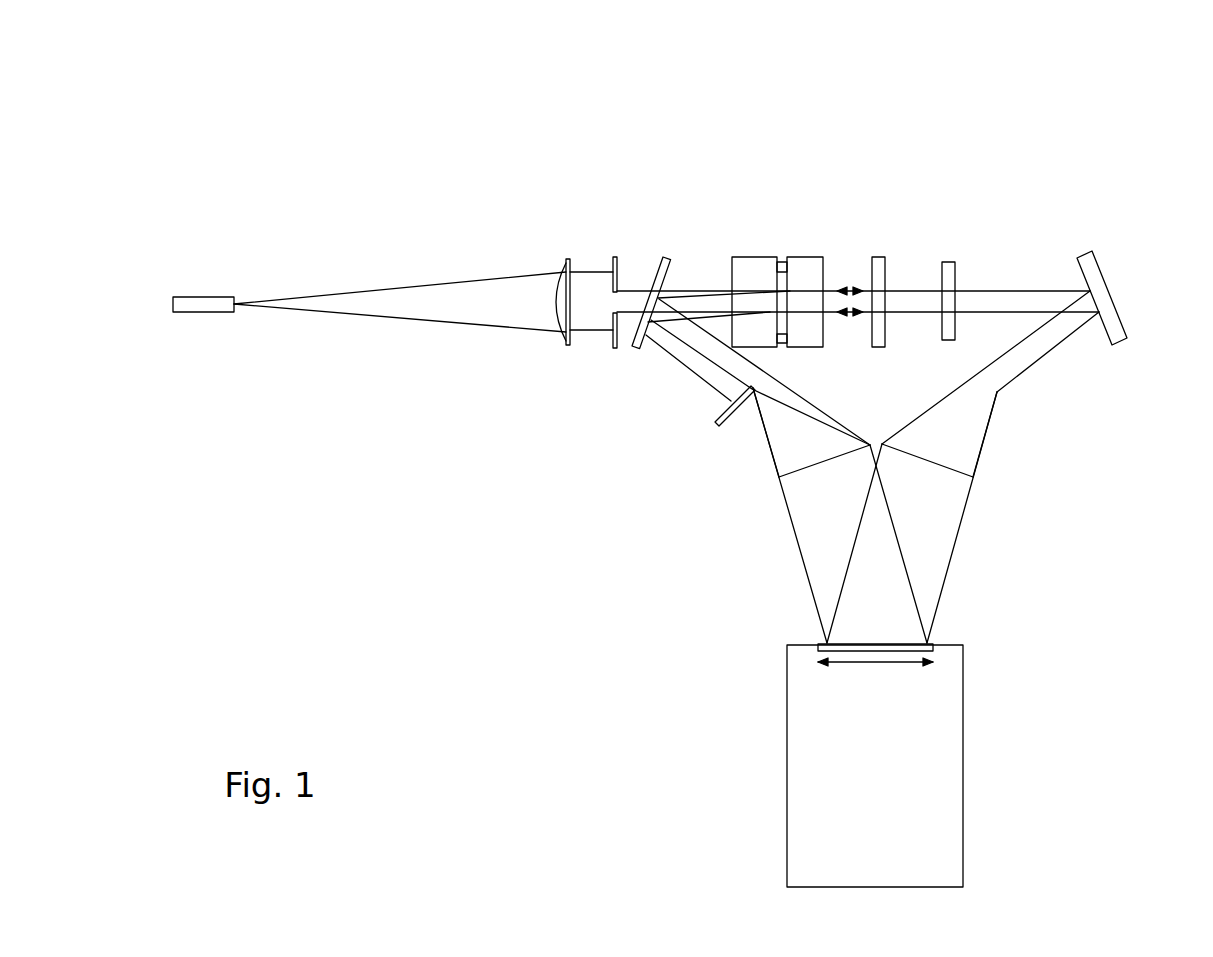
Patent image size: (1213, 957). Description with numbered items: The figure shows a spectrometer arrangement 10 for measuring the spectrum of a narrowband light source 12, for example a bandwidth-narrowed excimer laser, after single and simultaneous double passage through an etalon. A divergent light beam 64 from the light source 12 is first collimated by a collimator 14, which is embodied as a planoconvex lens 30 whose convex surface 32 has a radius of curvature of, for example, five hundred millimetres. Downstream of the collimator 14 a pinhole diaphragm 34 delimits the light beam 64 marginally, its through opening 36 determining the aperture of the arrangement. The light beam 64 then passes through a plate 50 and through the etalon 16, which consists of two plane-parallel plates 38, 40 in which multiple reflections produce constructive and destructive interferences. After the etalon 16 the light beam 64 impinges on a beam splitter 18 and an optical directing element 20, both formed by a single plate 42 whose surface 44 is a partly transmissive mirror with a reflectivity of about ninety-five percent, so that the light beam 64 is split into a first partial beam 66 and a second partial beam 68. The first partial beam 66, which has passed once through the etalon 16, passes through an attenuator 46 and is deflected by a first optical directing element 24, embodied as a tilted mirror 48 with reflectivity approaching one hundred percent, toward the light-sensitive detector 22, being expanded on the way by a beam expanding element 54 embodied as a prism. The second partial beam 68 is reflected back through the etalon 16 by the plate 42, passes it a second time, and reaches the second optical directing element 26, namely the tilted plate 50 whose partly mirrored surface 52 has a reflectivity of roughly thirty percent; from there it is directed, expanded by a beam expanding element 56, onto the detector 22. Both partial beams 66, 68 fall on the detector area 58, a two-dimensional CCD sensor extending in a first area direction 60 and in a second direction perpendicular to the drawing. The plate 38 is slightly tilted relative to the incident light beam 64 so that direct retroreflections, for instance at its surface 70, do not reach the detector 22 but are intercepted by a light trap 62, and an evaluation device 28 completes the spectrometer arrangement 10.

The spectrometer arrangement 10 is at (673, 464).
The light source 12 is at (197, 308).
The collimator 14 is at (400, 256).
The etalon 16 is at (770, 225).
The beam splitter 18 is at (868, 243).
The optical directing element 20 is at (868, 258).
The light-sensitive detector 22 is at (880, 627).
The first optical directing element 24 is at (1132, 258).
The second optical directing element 26 is at (673, 248).
The evaluation device 28 is at (803, 766).
The planoconvex lens 30 is at (564, 277).
The convex surface 32 is at (575, 330).
The pinhole diaphragm 34 is at (617, 258).
The through opening 36 is at (616, 340).
The plate 38 is at (737, 257).
The plate 40 is at (803, 260).
The plate 42 is at (880, 262).
The surface 44 is at (872, 333).
The attenuator 46 is at (950, 266).
The mirror 48 is at (1124, 335).
The plate 50 is at (670, 258).
The surface 52 is at (647, 347).
The beam expanding element 54 is at (980, 436).
The beam expanding element 56 is at (772, 437).
The detector area 58 is at (893, 641).
The first area direction 60 is at (870, 662).
The light trap 62 is at (717, 421).
The light beam 64 is at (292, 305).
The first partial beam 66 is at (919, 304).
The second partial beam 68 is at (840, 316).
The surface 70 is at (780, 262).